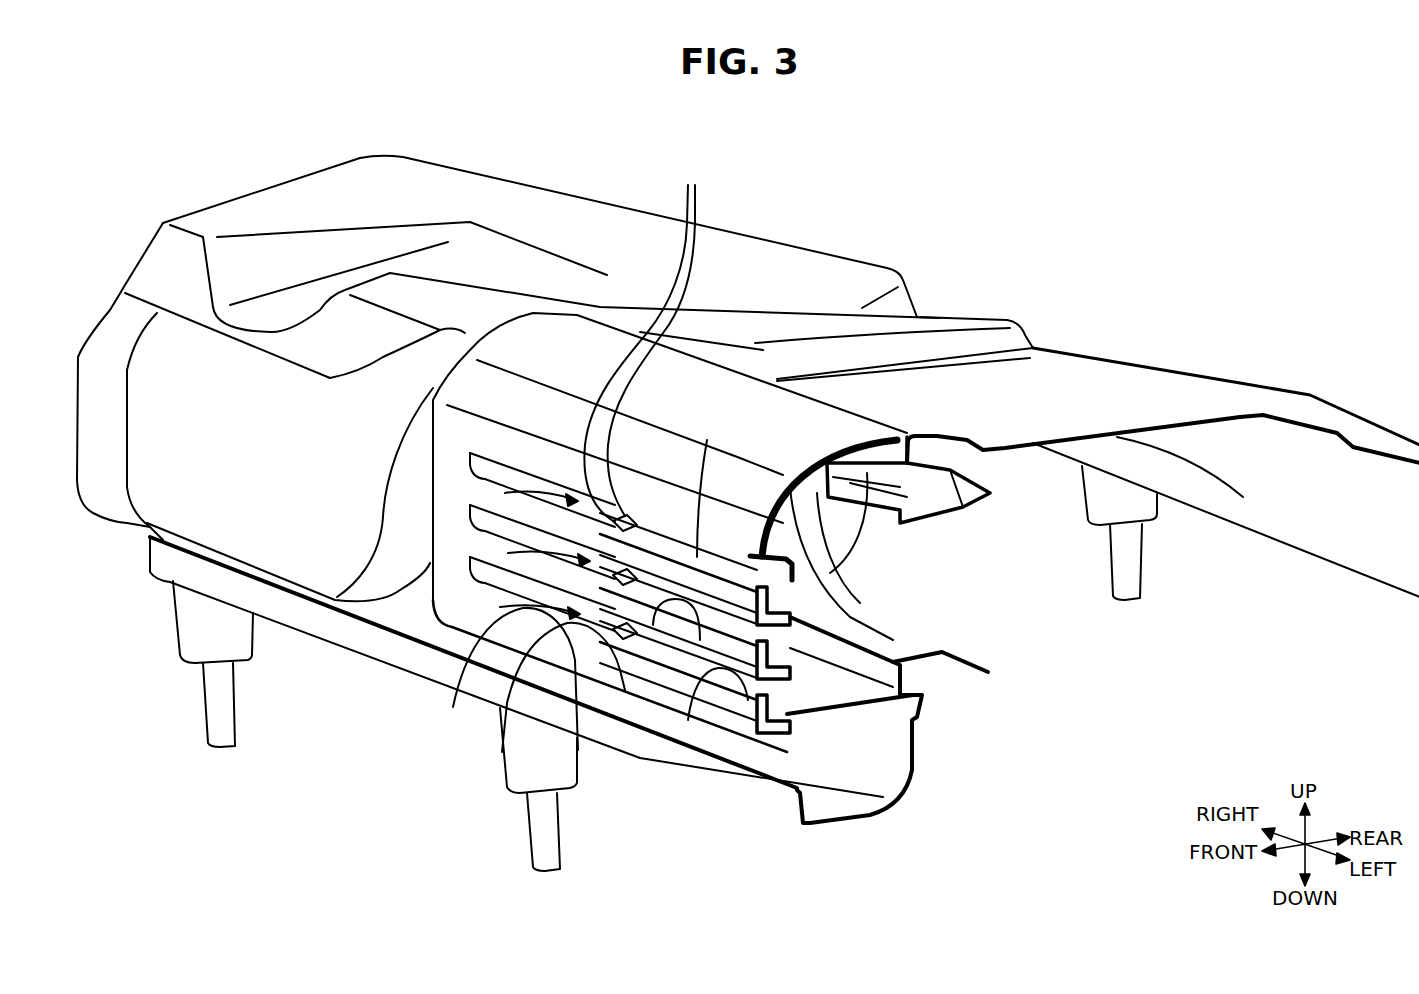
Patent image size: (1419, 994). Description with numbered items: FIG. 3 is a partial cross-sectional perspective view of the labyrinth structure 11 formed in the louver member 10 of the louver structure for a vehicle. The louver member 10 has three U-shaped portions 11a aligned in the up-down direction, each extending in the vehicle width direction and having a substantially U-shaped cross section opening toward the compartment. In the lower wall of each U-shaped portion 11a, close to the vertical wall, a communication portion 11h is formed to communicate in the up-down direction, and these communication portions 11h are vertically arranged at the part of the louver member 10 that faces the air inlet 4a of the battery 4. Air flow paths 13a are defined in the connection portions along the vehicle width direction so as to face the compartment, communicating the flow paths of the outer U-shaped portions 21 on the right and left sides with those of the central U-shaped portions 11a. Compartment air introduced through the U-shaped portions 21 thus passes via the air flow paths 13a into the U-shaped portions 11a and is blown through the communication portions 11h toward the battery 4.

The battery 4 is at (1188, 390).
The air inlet 4a is at (862, 458).
The louver member 10 is at (578, 340).
The labyrinth structure 11 is at (806, 622).
The U-shaped portion 11a is at (485, 490).
The communication portion 11h is at (697, 523).
The air flow path 13a is at (475, 770).
The U-shaped portion 21 is at (470, 428).